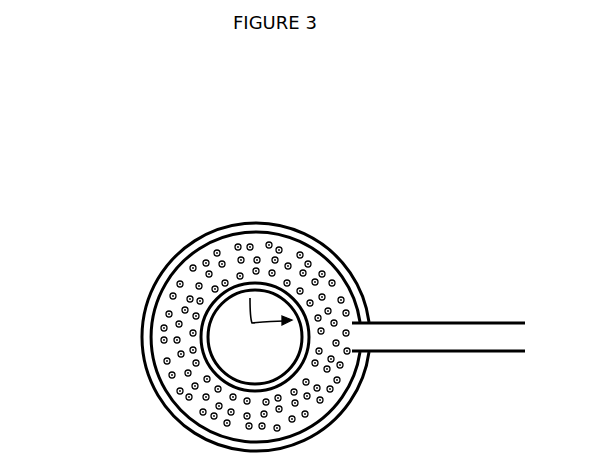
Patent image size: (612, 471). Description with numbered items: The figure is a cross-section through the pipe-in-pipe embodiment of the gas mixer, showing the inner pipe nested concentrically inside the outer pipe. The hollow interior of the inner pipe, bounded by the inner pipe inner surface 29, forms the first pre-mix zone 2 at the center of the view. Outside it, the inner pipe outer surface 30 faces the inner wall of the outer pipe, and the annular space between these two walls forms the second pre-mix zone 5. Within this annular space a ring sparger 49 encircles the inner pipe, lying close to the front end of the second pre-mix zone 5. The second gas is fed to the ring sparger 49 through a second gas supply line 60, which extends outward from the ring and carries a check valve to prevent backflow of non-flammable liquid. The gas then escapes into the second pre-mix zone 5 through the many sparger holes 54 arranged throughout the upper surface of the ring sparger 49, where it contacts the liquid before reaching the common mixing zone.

The first pre-mix zone 2 is at (252, 338).
The second pre-mix zone 5 is at (190, 320).
The inner pipe inner surface 29 is at (262, 284).
The inner pipe outer surface 30 is at (205, 337).
The ring sparger 49 is at (327, 255).
The sparger holes 54 is at (205, 358).
The second gas supply line 60 is at (483, 353).